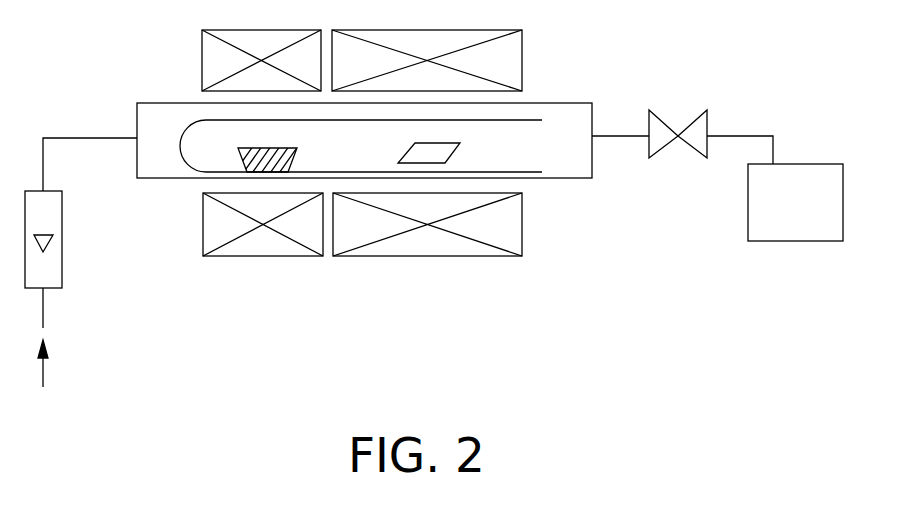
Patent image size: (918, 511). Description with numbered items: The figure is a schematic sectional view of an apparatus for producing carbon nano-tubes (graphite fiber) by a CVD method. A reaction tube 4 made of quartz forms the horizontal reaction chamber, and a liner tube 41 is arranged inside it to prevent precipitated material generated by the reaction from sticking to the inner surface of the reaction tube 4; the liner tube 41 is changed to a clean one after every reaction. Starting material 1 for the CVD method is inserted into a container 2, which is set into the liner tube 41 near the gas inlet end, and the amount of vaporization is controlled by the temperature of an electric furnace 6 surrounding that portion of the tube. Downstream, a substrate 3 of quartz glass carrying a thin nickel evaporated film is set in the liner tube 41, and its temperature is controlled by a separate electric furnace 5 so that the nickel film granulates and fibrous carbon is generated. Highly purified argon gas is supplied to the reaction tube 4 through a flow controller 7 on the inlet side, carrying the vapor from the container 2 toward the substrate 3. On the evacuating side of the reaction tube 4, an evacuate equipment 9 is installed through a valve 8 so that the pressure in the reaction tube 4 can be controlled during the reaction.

The starting material 1 is at (258, 149).
The container 2 is at (238, 150).
The substrate 3 is at (458, 147).
The reaction tube 4 is at (580, 178).
The liner tube 41 is at (530, 172).
The electric furnace 5 is at (440, 256).
The electric furnace 6 is at (279, 256).
The flow controller 7 is at (63, 226).
The valve 8 is at (700, 110).
The evacuate equipment 9 is at (800, 241).